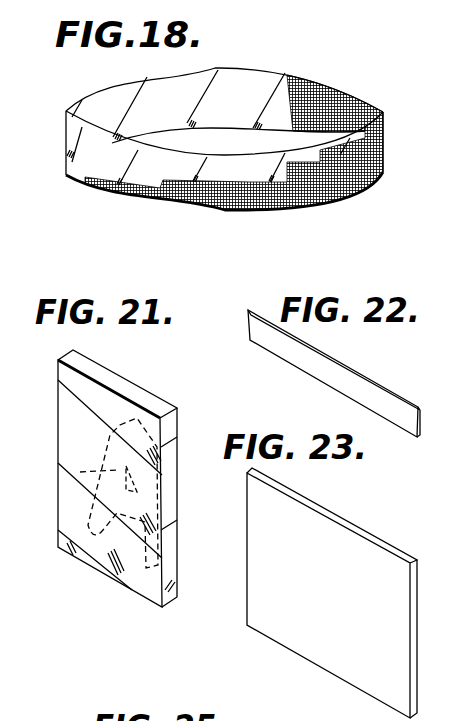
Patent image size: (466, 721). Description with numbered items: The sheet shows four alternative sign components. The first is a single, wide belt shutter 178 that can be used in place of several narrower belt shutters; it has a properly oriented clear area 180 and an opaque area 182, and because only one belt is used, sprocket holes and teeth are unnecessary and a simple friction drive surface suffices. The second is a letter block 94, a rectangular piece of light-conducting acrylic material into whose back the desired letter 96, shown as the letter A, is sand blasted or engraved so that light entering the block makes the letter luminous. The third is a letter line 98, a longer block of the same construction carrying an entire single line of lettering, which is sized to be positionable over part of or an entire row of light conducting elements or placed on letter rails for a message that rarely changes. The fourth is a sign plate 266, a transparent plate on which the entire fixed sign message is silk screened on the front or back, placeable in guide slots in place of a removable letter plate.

In FIG. 18, the single belt shutter 178 is at (80, 162).
In FIG. 18, the clear area 180 is at (75, 139).
In FIG. 18, the opaque area 182 is at (243, 200).
In FIG. 21, the letter block 94 is at (92, 557).
In FIG. 21, the letter 96 is at (80, 472).
In FIG. 22, the letter line 98 is at (298, 367).
In FIG. 23, the sign plate 266 is at (268, 630).